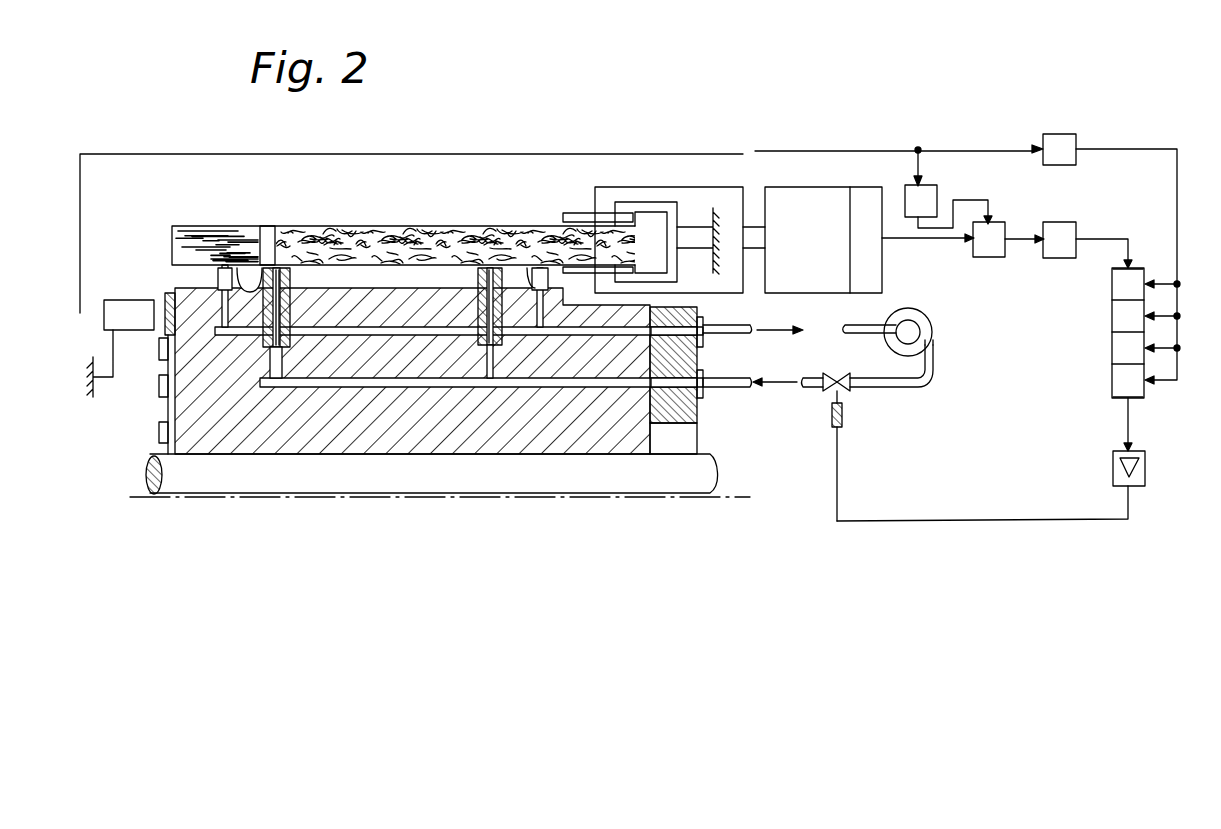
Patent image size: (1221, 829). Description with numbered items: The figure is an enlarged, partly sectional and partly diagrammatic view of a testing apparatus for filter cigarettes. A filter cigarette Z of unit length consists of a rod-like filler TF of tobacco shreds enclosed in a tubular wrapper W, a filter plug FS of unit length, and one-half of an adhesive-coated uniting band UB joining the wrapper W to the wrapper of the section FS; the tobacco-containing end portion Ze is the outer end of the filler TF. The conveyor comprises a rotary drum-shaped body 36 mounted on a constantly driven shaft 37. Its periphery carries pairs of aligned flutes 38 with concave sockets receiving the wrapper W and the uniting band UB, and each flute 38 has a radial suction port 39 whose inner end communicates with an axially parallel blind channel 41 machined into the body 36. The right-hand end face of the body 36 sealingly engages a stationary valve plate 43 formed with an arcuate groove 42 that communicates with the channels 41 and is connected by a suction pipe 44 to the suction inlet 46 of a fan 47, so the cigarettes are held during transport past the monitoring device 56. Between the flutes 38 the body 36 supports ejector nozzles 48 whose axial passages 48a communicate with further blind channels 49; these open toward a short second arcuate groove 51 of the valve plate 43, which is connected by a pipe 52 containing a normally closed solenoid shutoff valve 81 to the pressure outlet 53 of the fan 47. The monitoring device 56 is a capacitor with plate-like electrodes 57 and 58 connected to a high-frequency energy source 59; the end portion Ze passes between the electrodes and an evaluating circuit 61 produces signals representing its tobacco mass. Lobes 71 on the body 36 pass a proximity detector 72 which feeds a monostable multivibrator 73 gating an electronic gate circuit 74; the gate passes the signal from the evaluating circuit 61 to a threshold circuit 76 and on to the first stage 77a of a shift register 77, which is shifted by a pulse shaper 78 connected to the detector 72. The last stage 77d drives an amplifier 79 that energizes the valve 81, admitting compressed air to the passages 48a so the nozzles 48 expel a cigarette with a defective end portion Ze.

The drum-shaped body 36 is at (543, 440).
The shaft 37 is at (147, 470).
The flutes 38 is at (217, 282).
The suction port 39 is at (217, 277).
The channels 41 is at (308, 330).
The arcuate groove 42 is at (700, 357).
The valve plate 43 is at (700, 442).
The suction pipe 44 is at (733, 327).
The suction inlet 46 is at (905, 318).
The fan 47 is at (933, 332).
The ejector nozzles 48 is at (260, 250).
The axial passages 48a is at (478, 276).
The channels 49 is at (613, 383).
The second arcuate groove 51 is at (700, 416).
The pipe 52 is at (925, 386).
The pressure outlet 53 is at (928, 345).
The monitoring device 56 is at (641, 173).
The electrode 57 is at (583, 212).
The electrode 58 is at (567, 272).
The energy source 59 is at (823, 240).
The evaluating circuit 61 is at (866, 170).
The lobes 71 is at (162, 296).
The proximity detector 72 is at (122, 300).
The monostable multivibrator 73 is at (926, 196).
The gate circuit 74 is at (986, 257).
The threshold circuit 76 is at (1053, 258).
The shift register 77 is at (1158, 416).
The first stage 77a is at (1124, 286).
The last stage 77d is at (1119, 386).
The pulse shaper 78 is at (1058, 138).
The amplifier 79 is at (1113, 470).
The shutoff valve 81 is at (845, 393).
The uniting band UB is at (240, 226).
The tubular wrapper W is at (442, 225).
The filter plug FS is at (205, 237).
The filter cigarette Z is at (398, 218).
The rod-like filler TF is at (405, 237).
The tobacco-containing end portion Ze is at (646, 242).